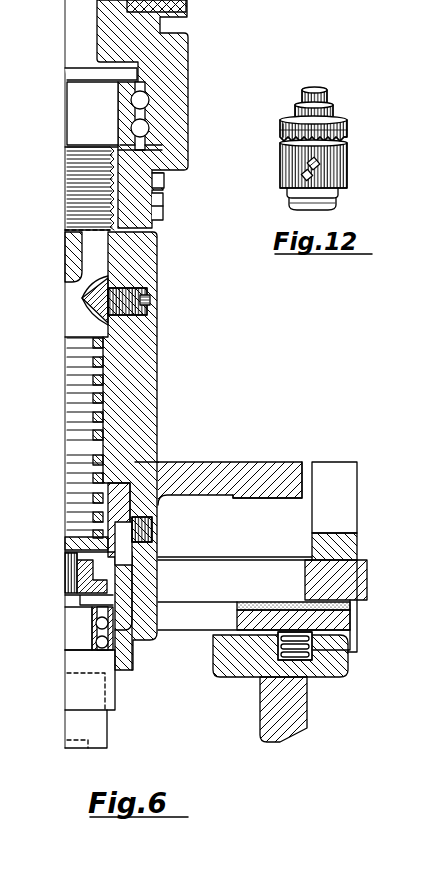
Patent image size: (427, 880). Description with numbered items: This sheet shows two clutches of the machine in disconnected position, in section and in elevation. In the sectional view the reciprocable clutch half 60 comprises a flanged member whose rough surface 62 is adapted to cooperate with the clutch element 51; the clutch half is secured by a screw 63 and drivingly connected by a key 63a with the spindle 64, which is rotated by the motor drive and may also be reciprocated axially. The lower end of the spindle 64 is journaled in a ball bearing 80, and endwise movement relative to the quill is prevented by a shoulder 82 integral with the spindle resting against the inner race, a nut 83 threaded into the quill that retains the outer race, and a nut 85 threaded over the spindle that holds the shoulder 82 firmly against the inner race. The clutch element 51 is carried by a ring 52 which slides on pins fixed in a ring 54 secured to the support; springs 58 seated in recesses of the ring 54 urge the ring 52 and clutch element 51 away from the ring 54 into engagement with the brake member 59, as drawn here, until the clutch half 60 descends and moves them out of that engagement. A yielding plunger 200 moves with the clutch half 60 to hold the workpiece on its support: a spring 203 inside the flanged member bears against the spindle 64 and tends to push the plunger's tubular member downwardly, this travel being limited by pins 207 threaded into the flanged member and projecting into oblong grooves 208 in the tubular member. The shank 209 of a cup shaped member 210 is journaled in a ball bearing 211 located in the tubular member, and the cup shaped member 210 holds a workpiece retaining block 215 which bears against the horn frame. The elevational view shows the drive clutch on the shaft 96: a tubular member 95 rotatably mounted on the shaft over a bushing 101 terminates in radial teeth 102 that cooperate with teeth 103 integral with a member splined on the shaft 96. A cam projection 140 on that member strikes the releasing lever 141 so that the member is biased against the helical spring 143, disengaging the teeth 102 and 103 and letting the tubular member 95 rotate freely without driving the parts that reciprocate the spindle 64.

In FIG. 6, the ball bearing 80 is at (152, 115).
In FIG. 6, the shoulder 82 is at (134, 79).
In FIG. 6, the nut 83 is at (168, 181).
In FIG. 6, the nut 85 is at (165, 203).
In FIG. 6, the key 63a is at (70, 262).
In FIG. 6, the spindle 64 is at (72, 298).
In FIG. 6, the screw 63 is at (150, 294).
In FIG. 6, the spring 203 is at (75, 388).
In FIG. 6, the reciprocable clutch half 60 is at (152, 460).
In FIG. 6, the rough surface 62 is at (272, 502).
In FIG. 6, the pins 207 is at (126, 530).
In FIG. 6, the oblong grooves 208 is at (125, 551).
In FIG. 6, the yielding plunger 200 is at (127, 581).
In FIG. 6, the ball bearing 211 is at (95, 627).
In FIG. 6, the shank 209 is at (72, 642).
In FIG. 6, the cup shaped member 210 is at (75, 669).
In FIG. 6, the workpiece retaining block 215 is at (75, 720).
In FIG. 6, the brake member 59 is at (360, 582).
In FIG. 6, the clutch element 51 is at (262, 600).
In FIG. 6, the ring 52 is at (340, 622).
In FIG. 6, the ring 54 is at (238, 672).
In FIG. 6, the springs 58 is at (300, 650).
In FIG. 12, the shaft 96 is at (322, 92).
In FIG. 12, the bushing 101 is at (335, 110).
In FIG. 12, the tubular member 95 is at (348, 124).
In FIG. 12, the radial teeth 102 is at (283, 132).
In FIG. 12, the teeth 103 is at (282, 156).
In FIG. 12, the releasing lever 141 is at (320, 165).
In FIG. 12, the cam projection 140 is at (303, 176).
In FIG. 12, the helical spring 143 is at (340, 201).